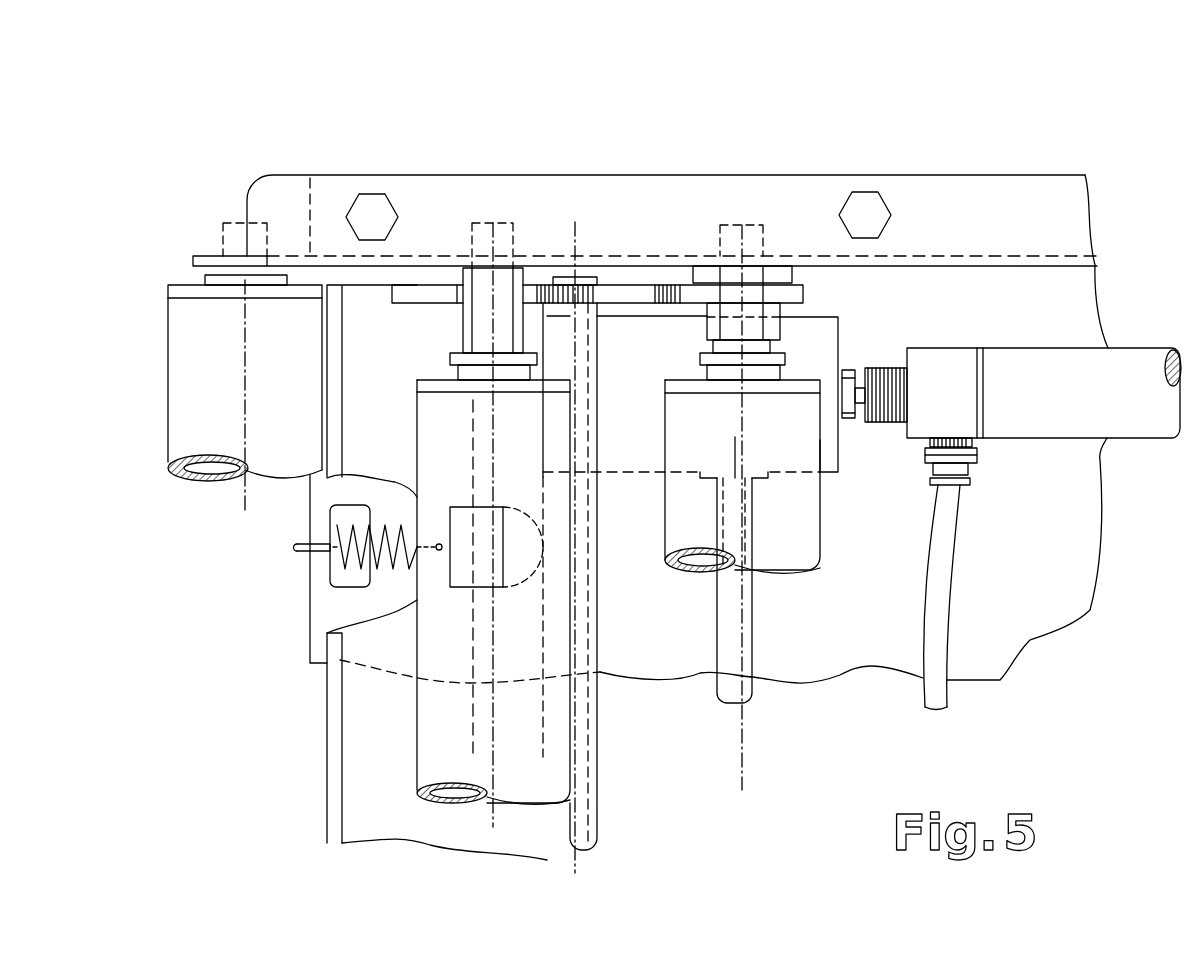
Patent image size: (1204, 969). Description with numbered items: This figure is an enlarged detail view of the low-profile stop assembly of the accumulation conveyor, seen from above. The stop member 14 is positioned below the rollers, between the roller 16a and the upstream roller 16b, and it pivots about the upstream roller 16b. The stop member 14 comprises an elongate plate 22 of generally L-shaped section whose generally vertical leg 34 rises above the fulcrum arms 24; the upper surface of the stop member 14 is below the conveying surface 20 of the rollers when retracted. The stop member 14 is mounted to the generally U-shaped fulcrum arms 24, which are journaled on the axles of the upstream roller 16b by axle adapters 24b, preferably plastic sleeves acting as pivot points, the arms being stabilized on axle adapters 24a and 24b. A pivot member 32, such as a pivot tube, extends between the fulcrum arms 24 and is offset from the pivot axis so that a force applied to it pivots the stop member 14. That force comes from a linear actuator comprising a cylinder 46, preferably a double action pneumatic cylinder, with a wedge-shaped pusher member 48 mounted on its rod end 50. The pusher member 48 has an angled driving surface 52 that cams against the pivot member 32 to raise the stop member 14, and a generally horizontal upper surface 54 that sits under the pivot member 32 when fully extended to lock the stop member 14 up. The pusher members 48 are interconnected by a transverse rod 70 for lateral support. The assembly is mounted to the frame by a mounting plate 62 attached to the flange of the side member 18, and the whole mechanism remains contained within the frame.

The stop member 14 is at (343, 268).
The side member 18 is at (978, 175).
The elongate plate 22 is at (365, 308).
The conveying surface 20 is at (413, 470).
The generally vertical leg 34 is at (717, 649).
The roller 16a is at (533, 613).
The upstream roller 16b is at (807, 523).
The fulcrum arm 24 is at (655, 283).
The axle adapter 24a is at (517, 343).
The axle adapter 24b is at (770, 350).
The pivot member 32 is at (597, 360).
The pusher member 48 is at (836, 317).
The angled driving surface 52 is at (621, 477).
The generally horizontal upper surface 54 is at (828, 442).
The mounting plate 62 is at (876, 303).
The rod end 50 is at (862, 368).
The cylinder 46 is at (1062, 440).
The rod 70 is at (753, 637).